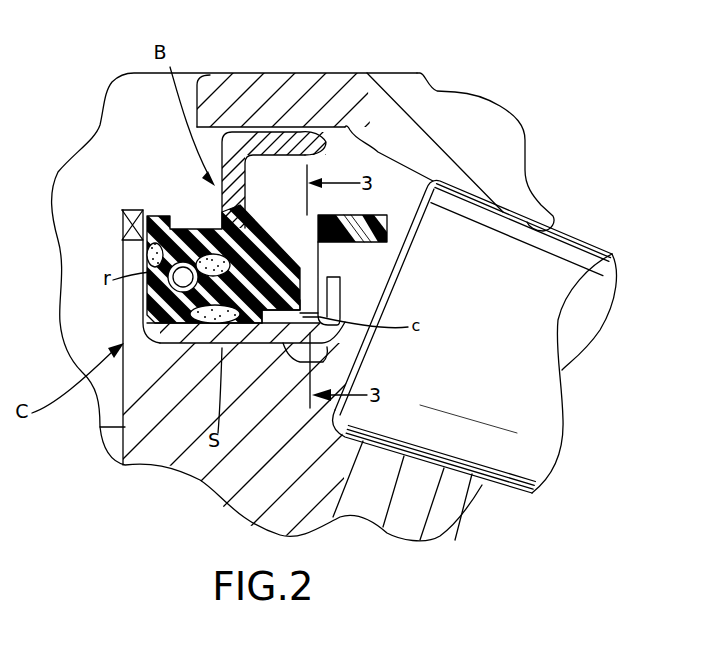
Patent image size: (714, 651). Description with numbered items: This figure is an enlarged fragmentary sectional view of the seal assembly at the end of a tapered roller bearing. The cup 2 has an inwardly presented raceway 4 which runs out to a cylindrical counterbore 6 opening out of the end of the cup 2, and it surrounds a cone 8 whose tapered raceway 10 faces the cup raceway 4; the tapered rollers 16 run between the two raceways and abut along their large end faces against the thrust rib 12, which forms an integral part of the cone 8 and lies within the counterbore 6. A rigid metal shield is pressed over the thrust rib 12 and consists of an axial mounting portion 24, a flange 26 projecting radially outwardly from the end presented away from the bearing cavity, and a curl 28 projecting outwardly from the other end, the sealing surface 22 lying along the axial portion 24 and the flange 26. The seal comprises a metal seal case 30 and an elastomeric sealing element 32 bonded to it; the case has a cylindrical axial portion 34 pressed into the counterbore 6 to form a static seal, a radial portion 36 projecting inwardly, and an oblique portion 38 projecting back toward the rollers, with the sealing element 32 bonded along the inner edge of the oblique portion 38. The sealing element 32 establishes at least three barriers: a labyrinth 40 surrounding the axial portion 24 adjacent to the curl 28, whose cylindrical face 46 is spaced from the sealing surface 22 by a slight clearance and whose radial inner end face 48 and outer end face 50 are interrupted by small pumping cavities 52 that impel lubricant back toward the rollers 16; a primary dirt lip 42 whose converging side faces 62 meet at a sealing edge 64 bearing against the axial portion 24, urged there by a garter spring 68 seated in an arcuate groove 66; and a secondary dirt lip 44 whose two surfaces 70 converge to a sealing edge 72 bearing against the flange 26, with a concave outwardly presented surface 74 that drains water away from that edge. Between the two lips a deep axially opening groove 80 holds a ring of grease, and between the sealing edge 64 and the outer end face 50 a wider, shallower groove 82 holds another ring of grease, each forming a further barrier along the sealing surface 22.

The cup 2 is at (488, 118).
The raceway 4 is at (553, 216).
The cylindrical counterbore 6 is at (348, 129).
The cone 8 is at (443, 493).
The tapered raceway 10 is at (520, 464).
The thrust rib 12 is at (147, 457).
The tapered rollers 16 is at (537, 376).
The sealing surface 22 is at (258, 248).
The axial mounting portion 24 is at (194, 345).
The flange 26 is at (150, 292).
The curl 28 is at (300, 323).
The seal case 30 is at (253, 130).
The sealing element 32 is at (287, 270).
The axial portion 34 is at (279, 145).
The radial portion 36 is at (218, 127).
The oblique portion 38 is at (250, 203).
The labyrinth 40 is at (290, 283).
The primary dirt lip 42 is at (158, 300).
The secondary dirt lip 44 is at (160, 225).
The cylindrical face 46 is at (300, 362).
The inner end face 48 is at (300, 290).
The outer end face 50 is at (257, 348).
The cavities 52 is at (300, 307).
The side faces 62 is at (152, 350).
The sealing edge 64 is at (187, 348).
The groove 66 is at (160, 270).
The garter spring 68 is at (247, 172).
The surfaces 70 is at (152, 216).
The sealing edge 72 is at (131, 212).
The concave outwardly presented surface 74 is at (197, 229).
The groove 80 is at (168, 268).
The groove 82 is at (233, 348).